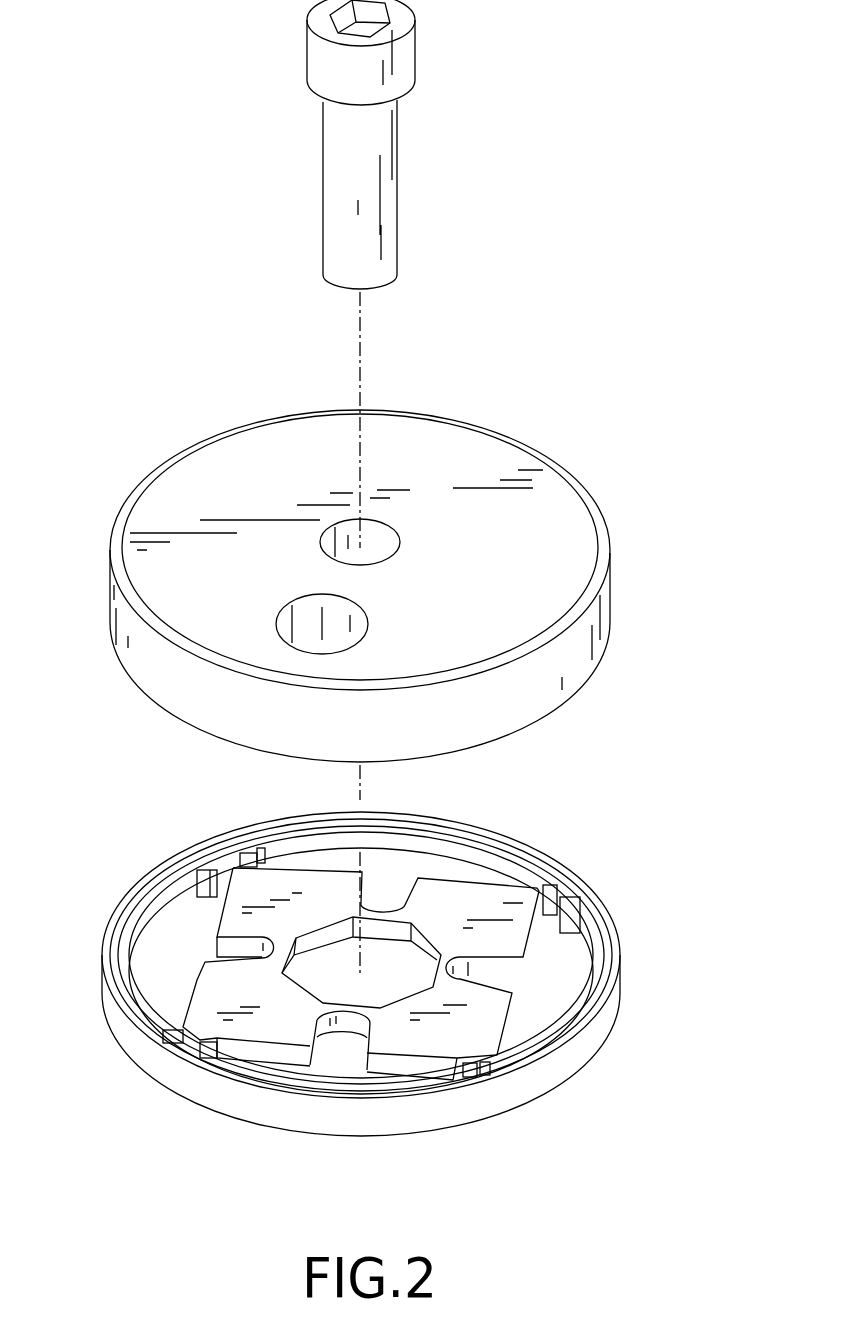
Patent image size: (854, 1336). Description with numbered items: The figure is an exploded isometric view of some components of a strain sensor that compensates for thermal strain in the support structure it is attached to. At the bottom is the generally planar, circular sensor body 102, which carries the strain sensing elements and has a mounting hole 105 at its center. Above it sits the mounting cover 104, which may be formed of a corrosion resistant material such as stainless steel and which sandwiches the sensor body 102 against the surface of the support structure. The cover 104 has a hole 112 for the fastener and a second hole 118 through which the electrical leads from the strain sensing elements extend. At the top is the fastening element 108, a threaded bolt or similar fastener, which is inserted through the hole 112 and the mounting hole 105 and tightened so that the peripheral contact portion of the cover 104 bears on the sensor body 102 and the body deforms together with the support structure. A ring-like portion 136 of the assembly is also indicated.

The sensor body 102 is at (414, 1021).
The mounting cover 104 is at (547, 476).
The mounting hole 105 is at (415, 953).
The fastening element 108 is at (417, 52).
The hole 112 is at (380, 535).
The hole 118 is at (310, 623).
The ring wall 136 is at (619, 953).